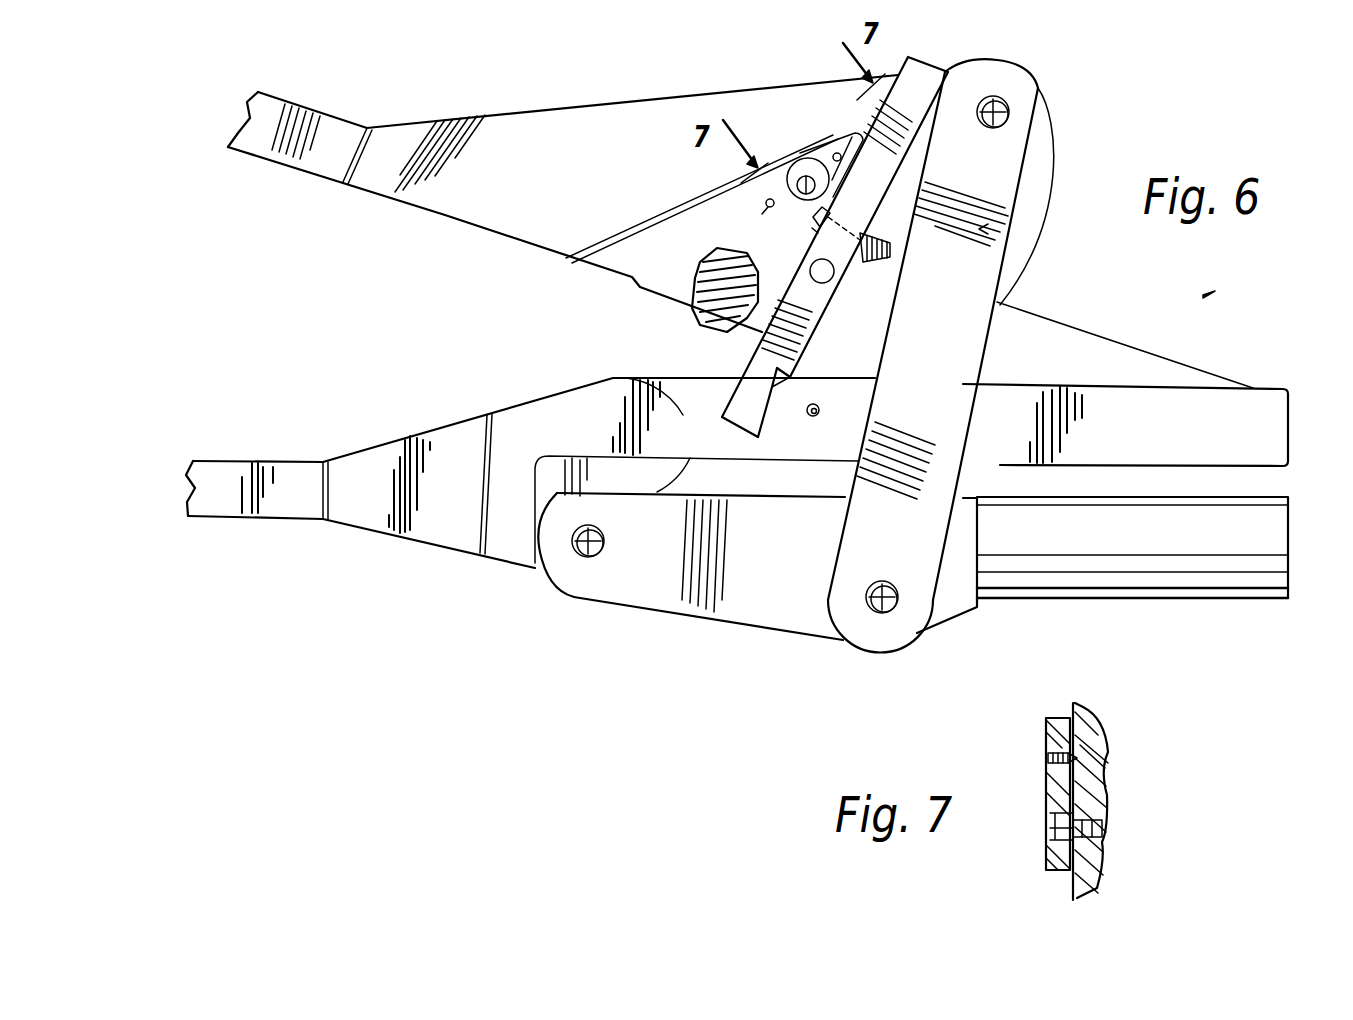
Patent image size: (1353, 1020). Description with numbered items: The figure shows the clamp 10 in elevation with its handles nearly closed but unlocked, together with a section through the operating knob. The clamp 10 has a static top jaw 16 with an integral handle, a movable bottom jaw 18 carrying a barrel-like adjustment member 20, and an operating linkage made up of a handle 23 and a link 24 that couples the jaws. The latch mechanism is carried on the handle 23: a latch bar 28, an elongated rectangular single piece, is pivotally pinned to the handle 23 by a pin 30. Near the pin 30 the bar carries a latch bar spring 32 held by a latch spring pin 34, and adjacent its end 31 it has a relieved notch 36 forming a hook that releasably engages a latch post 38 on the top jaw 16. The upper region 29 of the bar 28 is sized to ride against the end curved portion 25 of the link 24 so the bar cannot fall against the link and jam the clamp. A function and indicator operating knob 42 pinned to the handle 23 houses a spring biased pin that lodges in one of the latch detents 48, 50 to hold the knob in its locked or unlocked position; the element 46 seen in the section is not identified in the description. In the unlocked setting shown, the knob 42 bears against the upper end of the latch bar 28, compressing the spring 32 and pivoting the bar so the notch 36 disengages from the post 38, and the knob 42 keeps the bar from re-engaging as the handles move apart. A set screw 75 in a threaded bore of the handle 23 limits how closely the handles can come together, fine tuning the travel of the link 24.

In FIG. 6, the clamp 10 is at (1203, 295).
In FIG. 6, the static top jaw 16 is at (613, 378).
In FIG. 7, the static top jaw 16 is at (1108, 815).
In FIG. 6, the movable bottom jaw 18 is at (814, 570).
In FIG. 6, the barrel-like adjustment member 20 is at (1280, 531).
In FIG. 6, the handle 23 is at (658, 183).
In FIG. 6, the link 24 is at (948, 368).
In FIG. 6, the end curved portion 25 is at (1012, 64).
In FIG. 6, the latch bar 28 is at (878, 173).
In FIG. 6, the upper region 29 is at (918, 77).
In FIG. 6, the pin 30 is at (834, 273).
In FIG. 7, the pin 30 is at (1047, 828).
In FIG. 6, the end 31 is at (756, 420).
In FIG. 6, the latch bar spring 32 is at (890, 240).
In FIG. 6, the latch spring pin 34 is at (979, 229).
In FIG. 6, the relieved notch 36 is at (780, 393).
In FIG. 6, the latch post 38 is at (807, 420).
In FIG. 6, the function and indicator operating knob 42 is at (813, 162).
In FIG. 7, the function and indicator operating knob 42 is at (1046, 785).
In FIG. 7, the screw 46 is at (1107, 730).
In FIG. 7, the latch detent 48 is at (1108, 783).
In FIG. 6, the latch detent 50 is at (753, 227).
In FIG. 6, the set screw 75 is at (702, 328).